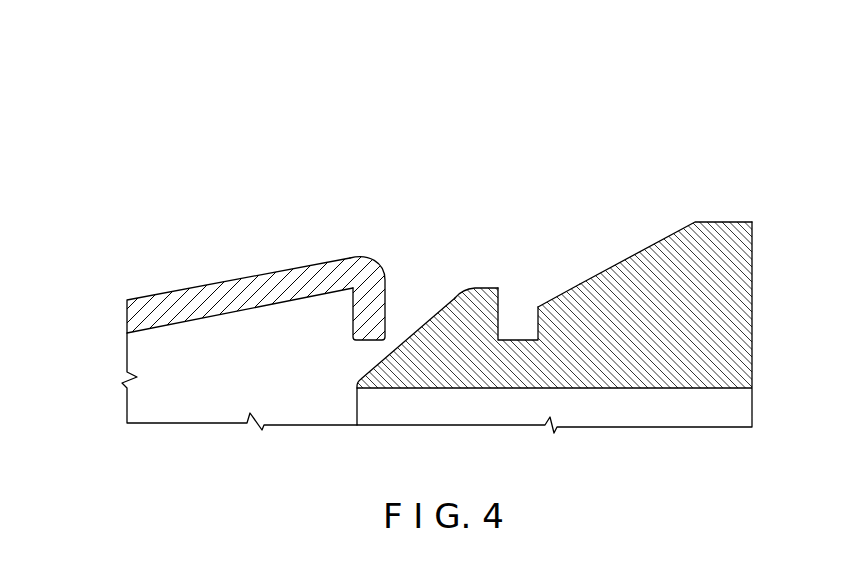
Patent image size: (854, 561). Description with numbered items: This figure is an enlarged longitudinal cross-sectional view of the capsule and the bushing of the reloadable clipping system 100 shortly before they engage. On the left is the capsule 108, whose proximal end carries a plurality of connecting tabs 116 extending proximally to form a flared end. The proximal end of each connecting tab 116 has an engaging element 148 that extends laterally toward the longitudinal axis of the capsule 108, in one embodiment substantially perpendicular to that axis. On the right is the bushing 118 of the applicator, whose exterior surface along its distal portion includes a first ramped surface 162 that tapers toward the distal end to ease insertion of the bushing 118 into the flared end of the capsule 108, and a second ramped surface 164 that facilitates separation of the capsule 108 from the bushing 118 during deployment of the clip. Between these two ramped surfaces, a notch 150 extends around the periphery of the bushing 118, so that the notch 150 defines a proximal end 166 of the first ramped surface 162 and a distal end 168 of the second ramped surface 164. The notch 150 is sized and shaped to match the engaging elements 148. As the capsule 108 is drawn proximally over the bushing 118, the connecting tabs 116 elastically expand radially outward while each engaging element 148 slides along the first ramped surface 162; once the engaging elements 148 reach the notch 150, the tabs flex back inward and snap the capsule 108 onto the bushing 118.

The reloadable clipping system 100 is at (353, 140).
The capsule 108 is at (130, 283).
The connecting tabs 116 is at (222, 298).
The engaging element 148 is at (363, 290).
The bushing 118 is at (718, 173).
The first ramped surface 162 is at (435, 318).
The proximal end of the first ramped surface 166 is at (488, 288).
The notch 150 is at (523, 303).
The distal end of the second ramped surface 168 is at (555, 298).
The second ramped surface 164 is at (623, 260).